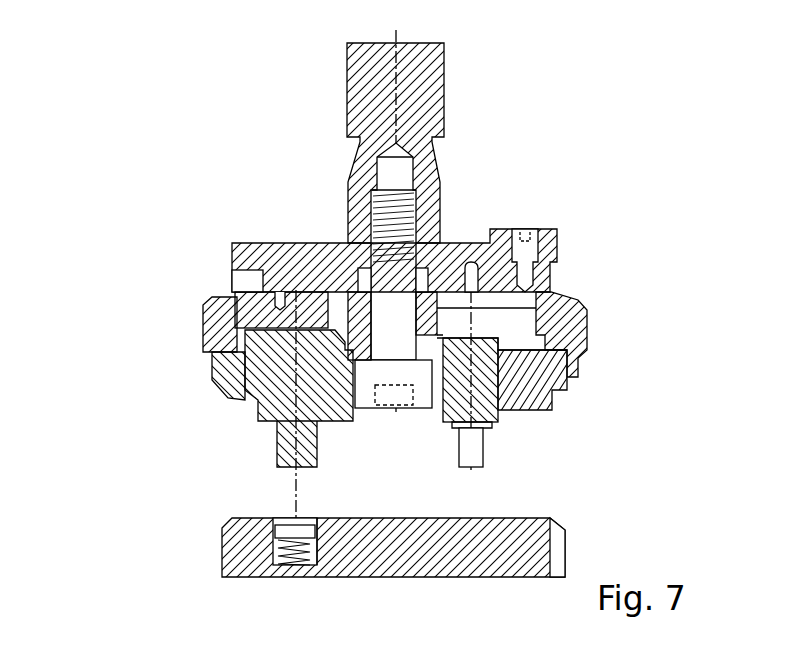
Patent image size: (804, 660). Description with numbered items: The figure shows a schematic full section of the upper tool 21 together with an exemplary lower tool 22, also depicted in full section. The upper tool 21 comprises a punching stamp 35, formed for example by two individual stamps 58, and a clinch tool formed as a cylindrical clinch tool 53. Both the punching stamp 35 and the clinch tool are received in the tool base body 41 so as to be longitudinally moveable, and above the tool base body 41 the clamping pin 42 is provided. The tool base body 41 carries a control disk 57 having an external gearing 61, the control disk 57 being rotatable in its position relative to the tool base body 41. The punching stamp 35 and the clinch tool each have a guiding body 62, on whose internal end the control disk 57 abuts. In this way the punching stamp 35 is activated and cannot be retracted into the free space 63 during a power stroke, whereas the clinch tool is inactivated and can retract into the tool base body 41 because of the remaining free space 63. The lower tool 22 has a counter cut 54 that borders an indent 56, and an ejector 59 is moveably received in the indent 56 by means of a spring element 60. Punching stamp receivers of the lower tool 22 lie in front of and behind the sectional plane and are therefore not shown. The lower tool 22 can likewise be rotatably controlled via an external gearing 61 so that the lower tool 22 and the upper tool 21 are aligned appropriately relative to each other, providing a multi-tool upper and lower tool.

The upper tool 21 is at (503, 158).
The lower tool 22 is at (384, 551).
The punching stamp 35 is at (237, 423).
The tool base body 41 is at (540, 392).
The clamping pin 42 is at (444, 90).
The cylindrical clinch tool 53 is at (286, 453).
The counter cut 54 is at (312, 527).
The indent 56 is at (318, 553).
The control disk 57 is at (236, 299).
The individual stamp 58 is at (478, 452).
The ejector 59 is at (285, 528).
The spring element 60 is at (291, 561).
The external gearing 61 is at (588, 326).
The guiding body 62 is at (260, 386).
The free space 63 is at (528, 322).